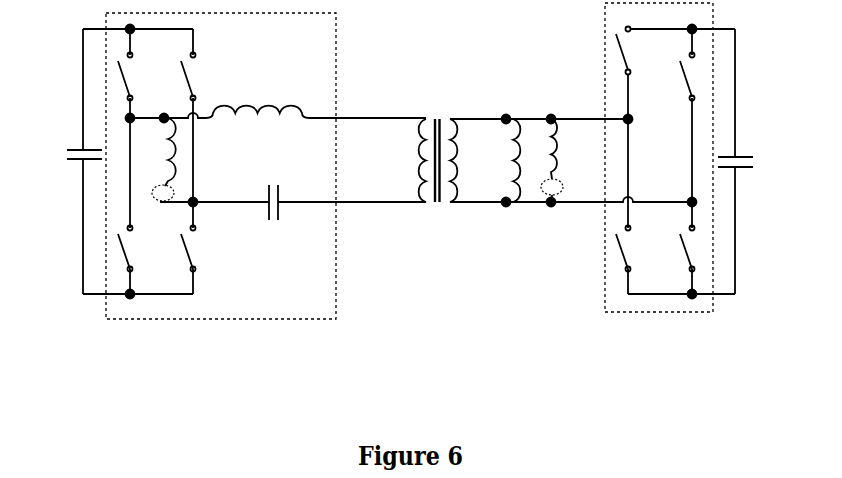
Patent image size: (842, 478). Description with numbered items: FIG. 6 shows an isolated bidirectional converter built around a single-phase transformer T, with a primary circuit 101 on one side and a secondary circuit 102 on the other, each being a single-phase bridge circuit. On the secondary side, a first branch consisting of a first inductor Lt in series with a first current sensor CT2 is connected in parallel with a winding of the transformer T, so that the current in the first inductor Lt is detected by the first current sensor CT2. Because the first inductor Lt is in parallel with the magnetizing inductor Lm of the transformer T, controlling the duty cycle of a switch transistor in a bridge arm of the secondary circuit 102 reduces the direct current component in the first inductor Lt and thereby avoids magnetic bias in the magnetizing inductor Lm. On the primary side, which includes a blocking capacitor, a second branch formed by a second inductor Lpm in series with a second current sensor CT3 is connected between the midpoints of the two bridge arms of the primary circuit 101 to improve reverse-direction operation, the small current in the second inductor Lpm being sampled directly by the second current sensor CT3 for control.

The primary circuit 101 is at (231, 166).
The secondary circuit 102 is at (604, 29).
The transformer T is at (438, 144).
The second inductor Lpm is at (155, 152).
The magnetizing inductor Lm is at (504, 160).
The first inductor Lt is at (544, 149).
The first current sensor CT2 is at (567, 187).
The second current sensor CT3 is at (159, 206).